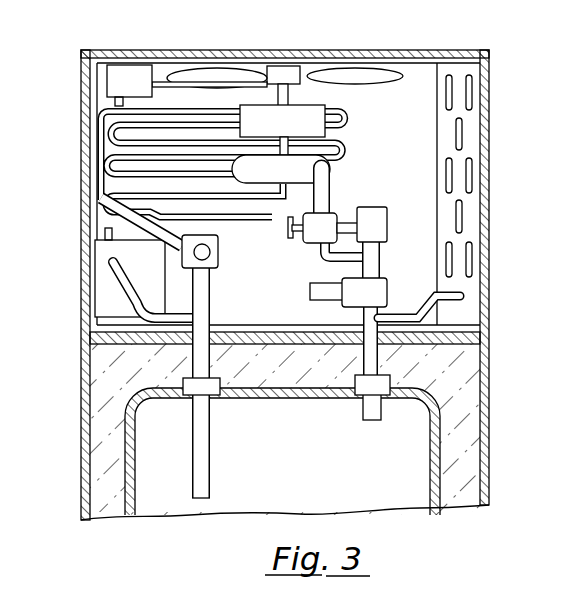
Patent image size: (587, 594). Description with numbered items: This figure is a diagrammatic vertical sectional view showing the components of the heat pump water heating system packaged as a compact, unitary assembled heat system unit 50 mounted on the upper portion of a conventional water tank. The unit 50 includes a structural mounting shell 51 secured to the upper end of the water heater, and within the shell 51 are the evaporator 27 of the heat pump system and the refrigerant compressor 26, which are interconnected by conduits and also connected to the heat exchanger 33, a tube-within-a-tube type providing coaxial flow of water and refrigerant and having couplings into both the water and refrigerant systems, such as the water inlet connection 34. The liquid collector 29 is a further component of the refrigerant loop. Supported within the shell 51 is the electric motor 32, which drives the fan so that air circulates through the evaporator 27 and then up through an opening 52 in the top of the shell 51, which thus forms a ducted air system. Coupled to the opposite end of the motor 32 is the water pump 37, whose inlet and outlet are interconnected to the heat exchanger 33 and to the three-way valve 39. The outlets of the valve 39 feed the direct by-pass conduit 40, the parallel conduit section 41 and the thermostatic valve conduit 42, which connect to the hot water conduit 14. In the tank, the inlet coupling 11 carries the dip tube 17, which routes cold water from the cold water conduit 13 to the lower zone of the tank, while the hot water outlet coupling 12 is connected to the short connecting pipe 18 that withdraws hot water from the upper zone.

The assembled heat system unit 50 is at (492, 118).
The structural mounting shell 51 is at (88, 203).
The opening 52 is at (182, 12).
The liquid collector 29 is at (124, 76).
The evaporator 27 is at (473, 207).
The compressor 26 is at (106, 292).
The heat exchanger 33 is at (98, 120).
The water inlet connection 34 is at (155, 240).
The electric motor 32 is at (300, 132).
The water pump 37 is at (298, 181).
The dip tube 17 is at (209, 467).
The cold water conduit 13 is at (212, 258).
The inlet coupling 11 is at (204, 388).
The direct by-pass conduit 40 is at (336, 260).
The conduit section 41 is at (379, 264).
The three-way valve 39 is at (317, 233).
The thermostatic valve conduit 42 is at (376, 222).
The connecting pipe 18 is at (362, 415).
The hot water outlet coupling 12 is at (376, 388).
The hot water conduit 14 is at (323, 292).